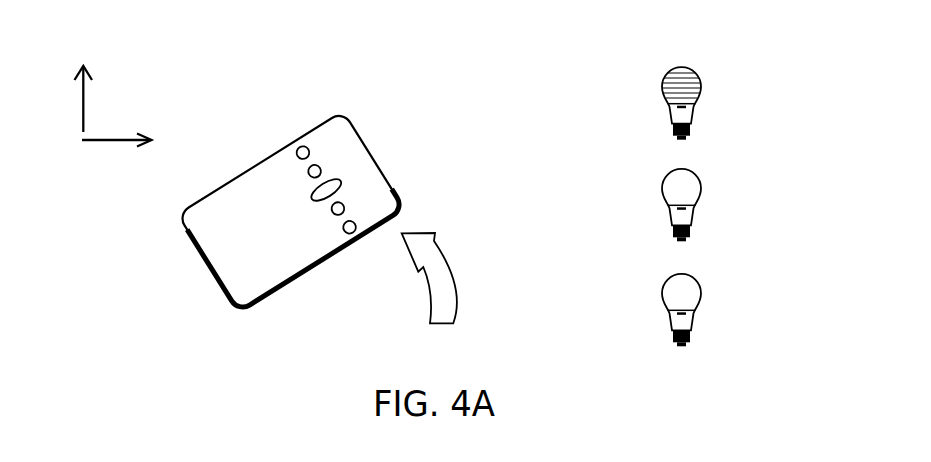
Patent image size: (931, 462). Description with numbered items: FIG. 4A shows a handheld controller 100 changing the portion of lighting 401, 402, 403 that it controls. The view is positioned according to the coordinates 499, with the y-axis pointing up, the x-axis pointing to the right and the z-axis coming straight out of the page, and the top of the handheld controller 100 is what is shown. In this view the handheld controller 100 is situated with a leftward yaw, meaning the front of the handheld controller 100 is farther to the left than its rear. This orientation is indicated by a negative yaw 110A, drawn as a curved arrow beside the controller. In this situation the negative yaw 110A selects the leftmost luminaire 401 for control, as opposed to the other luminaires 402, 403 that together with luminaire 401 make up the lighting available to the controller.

The coordinates 499 is at (150, 100).
The handheld controller 100 is at (207, 272).
The negative yaw 110A is at (471, 310).
The luminaire 401 is at (701, 98).
The luminaire 402 is at (701, 203).
The luminaire 403 is at (701, 302).